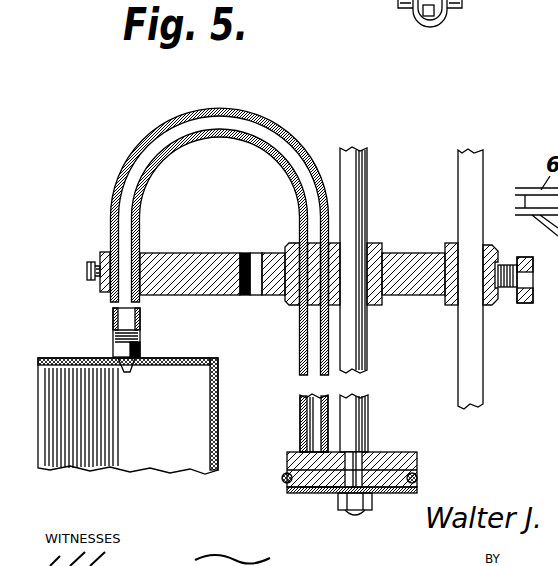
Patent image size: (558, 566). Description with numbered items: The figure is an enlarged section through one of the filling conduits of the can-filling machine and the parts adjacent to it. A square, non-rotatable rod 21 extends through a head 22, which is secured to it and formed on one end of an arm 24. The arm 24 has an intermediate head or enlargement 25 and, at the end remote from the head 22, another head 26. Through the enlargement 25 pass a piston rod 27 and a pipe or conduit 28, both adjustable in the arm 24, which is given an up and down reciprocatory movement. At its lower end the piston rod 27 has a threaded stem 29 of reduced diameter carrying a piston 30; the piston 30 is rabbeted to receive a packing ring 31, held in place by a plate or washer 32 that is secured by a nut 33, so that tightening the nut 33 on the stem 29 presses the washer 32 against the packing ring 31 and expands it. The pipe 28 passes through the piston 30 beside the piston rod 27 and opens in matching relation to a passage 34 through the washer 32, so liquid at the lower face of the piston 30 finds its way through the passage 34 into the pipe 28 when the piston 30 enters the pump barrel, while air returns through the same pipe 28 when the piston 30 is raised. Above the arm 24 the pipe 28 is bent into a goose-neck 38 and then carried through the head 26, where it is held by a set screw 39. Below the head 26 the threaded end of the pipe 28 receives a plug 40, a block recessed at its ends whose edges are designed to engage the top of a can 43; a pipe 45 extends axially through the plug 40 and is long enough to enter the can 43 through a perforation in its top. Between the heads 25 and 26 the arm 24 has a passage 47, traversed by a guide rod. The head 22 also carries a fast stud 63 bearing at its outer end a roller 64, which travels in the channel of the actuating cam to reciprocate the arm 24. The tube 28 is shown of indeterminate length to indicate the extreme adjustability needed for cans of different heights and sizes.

The rod 21 is at (484, 376).
The head 22 is at (450, 250).
The arm 24 is at (206, 258).
The head or enlargement 25 is at (373, 305).
The head 26 is at (101, 253).
The piston rod 27 is at (362, 190).
The pipe or conduit 28 is at (300, 412).
The stem 29 is at (398, 452).
The piston 30 is at (417, 462).
The packing ring 31 is at (419, 478).
The plate or washer 32 is at (397, 494).
The nut 33 is at (350, 512).
The passage 34 is at (318, 495).
The goose-neck 38 is at (217, 117).
The set screw 39 is at (88, 273).
The plug 40 is at (116, 348).
The can 43 is at (128, 416).
The pipe 45 is at (128, 367).
The passage 47 is at (255, 262).
The stud 63 is at (510, 266).
The roller 64 is at (525, 306).